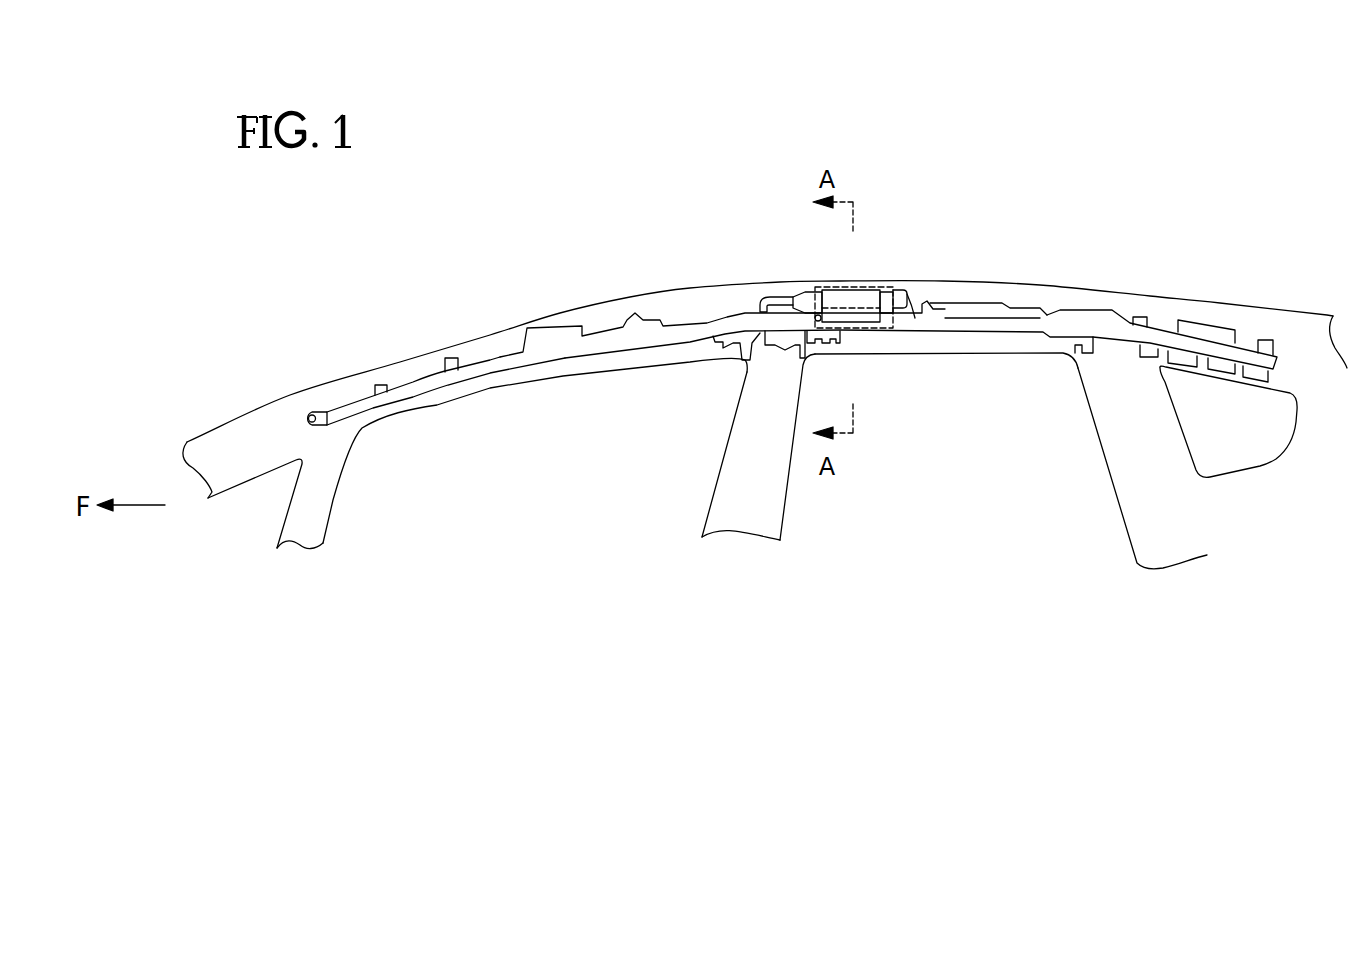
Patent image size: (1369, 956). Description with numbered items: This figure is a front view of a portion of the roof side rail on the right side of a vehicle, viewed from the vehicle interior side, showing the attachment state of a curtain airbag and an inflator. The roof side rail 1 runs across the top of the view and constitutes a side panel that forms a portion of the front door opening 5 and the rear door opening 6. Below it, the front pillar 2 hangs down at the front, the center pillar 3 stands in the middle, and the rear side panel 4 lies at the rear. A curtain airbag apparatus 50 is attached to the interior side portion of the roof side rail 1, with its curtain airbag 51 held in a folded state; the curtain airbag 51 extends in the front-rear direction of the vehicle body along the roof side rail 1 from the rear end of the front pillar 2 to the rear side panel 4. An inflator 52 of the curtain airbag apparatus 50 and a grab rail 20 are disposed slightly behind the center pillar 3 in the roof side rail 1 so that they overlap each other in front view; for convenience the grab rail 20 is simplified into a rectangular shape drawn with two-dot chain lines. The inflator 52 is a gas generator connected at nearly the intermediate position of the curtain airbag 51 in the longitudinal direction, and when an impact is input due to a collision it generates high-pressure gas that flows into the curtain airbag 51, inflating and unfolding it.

The roof side rail 1 is at (630, 296).
The front pillar 2 is at (215, 428).
The center pillar 3 is at (727, 452).
The rear side panel 4 is at (1220, 291).
The front door opening 5 is at (482, 395).
The rear door opening 6 is at (983, 357).
The grab rail 20 is at (878, 290).
The curtain airbag apparatus 50 is at (1087, 304).
The curtain airbag 51 is at (498, 354).
The inflator 52 is at (907, 290).